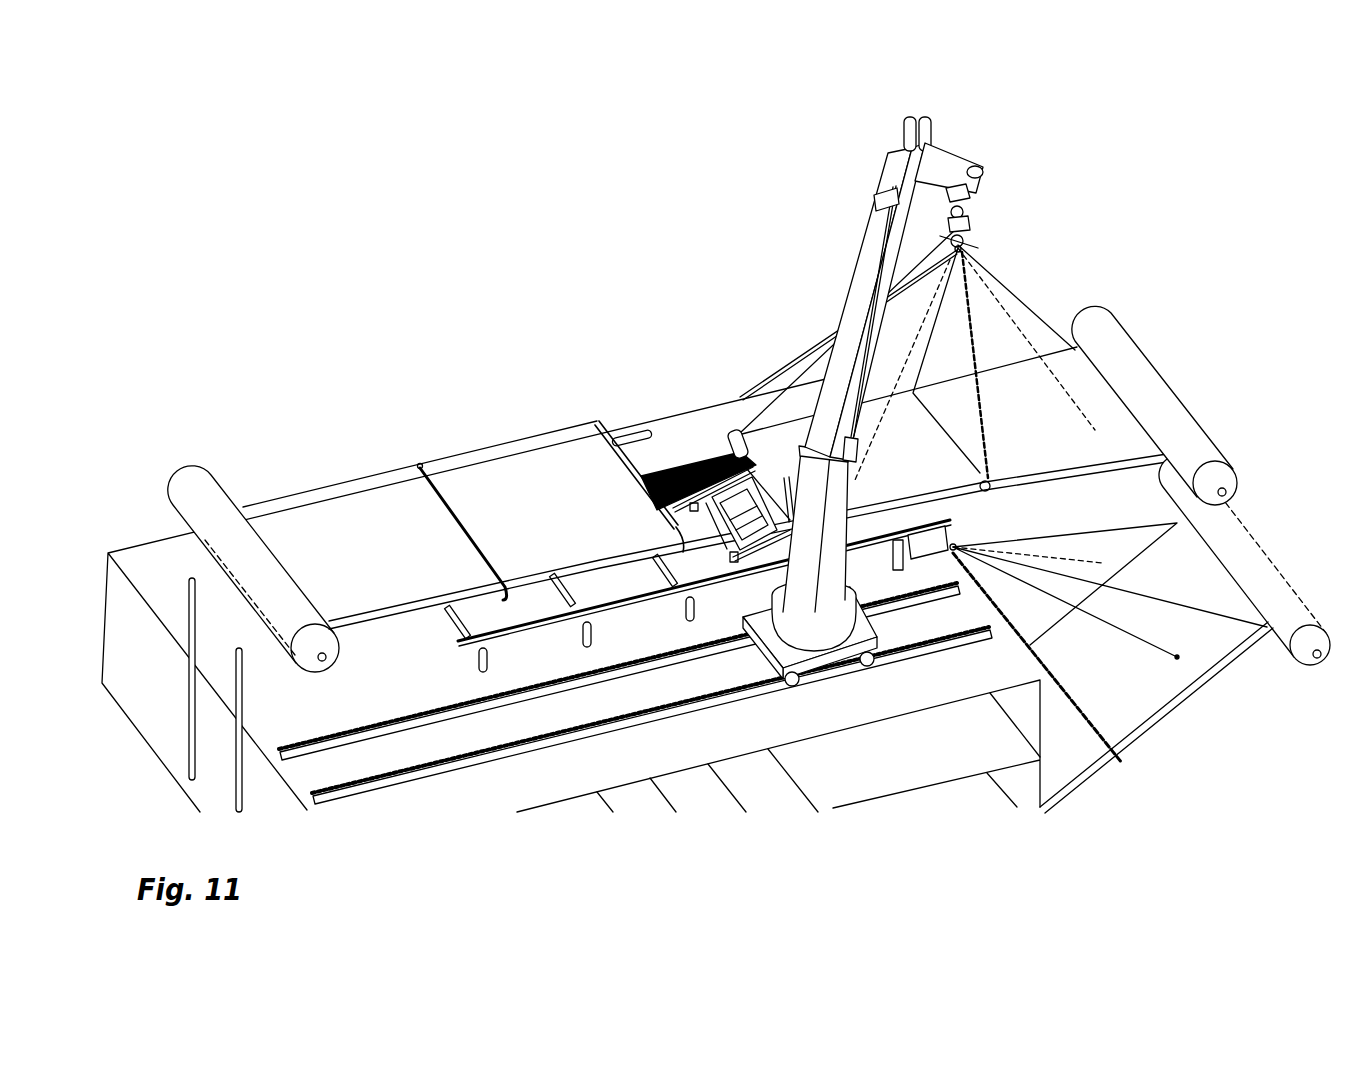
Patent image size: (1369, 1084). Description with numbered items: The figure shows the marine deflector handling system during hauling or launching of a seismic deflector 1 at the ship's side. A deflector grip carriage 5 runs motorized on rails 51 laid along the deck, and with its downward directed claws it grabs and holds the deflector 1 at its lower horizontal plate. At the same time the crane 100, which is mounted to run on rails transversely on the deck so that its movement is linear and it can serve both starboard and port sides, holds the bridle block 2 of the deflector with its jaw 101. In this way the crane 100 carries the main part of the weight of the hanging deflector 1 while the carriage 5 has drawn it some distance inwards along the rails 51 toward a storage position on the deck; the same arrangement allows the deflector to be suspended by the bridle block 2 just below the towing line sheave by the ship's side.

The deflector 1 is at (1170, 338).
The bridle block 2 is at (985, 236).
The carriage 5 is at (727, 453).
The rails 51 is at (653, 590).
The crane 100 is at (862, 252).
The jaw 101 is at (968, 190).